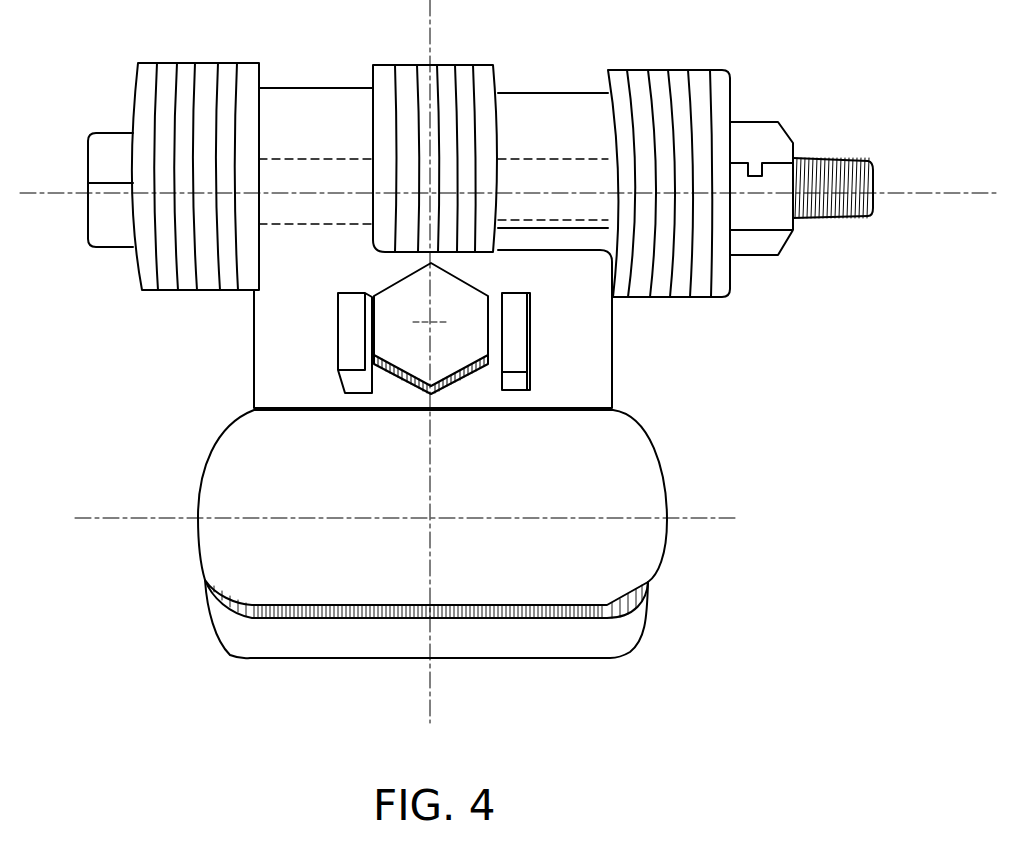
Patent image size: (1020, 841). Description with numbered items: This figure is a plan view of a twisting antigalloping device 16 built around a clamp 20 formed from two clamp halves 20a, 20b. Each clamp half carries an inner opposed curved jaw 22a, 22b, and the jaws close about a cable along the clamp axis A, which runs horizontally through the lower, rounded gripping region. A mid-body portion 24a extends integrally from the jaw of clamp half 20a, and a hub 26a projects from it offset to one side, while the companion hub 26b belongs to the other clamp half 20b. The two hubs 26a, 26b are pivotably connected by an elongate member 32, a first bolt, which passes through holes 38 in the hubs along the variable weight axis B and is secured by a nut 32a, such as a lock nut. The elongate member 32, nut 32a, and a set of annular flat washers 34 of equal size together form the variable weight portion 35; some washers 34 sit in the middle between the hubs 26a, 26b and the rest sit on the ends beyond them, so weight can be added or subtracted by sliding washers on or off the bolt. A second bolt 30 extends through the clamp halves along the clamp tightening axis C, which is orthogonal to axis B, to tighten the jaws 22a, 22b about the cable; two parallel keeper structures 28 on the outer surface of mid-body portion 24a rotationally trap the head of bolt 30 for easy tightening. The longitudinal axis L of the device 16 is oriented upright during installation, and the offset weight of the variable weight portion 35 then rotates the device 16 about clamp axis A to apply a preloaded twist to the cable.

The antigalloping device 16 is at (862, 406).
The clamp 20 is at (222, 473).
The clamp half 20a is at (652, 472).
The clamp half 20b is at (640, 643).
The jaw 22a is at (617, 617).
The jaw 22b is at (580, 623).
The mid-body portion 24a is at (260, 365).
The hub 26a is at (318, 95).
The hub 26b is at (563, 100).
The keeper structures 28 is at (347, 335).
The second bolt 30 is at (408, 277).
The elongate member 32 is at (100, 143).
The nut 32a is at (777, 133).
The flat washers 34 is at (147, 72).
The variable weight portion 35 is at (730, 82).
The holes 38 is at (325, 157).
The clamp axis A is at (110, 518).
The variable weight axis B is at (30, 192).
The clamp tightening axis C is at (427, 320).
The longitudinal axis L is at (432, 705).